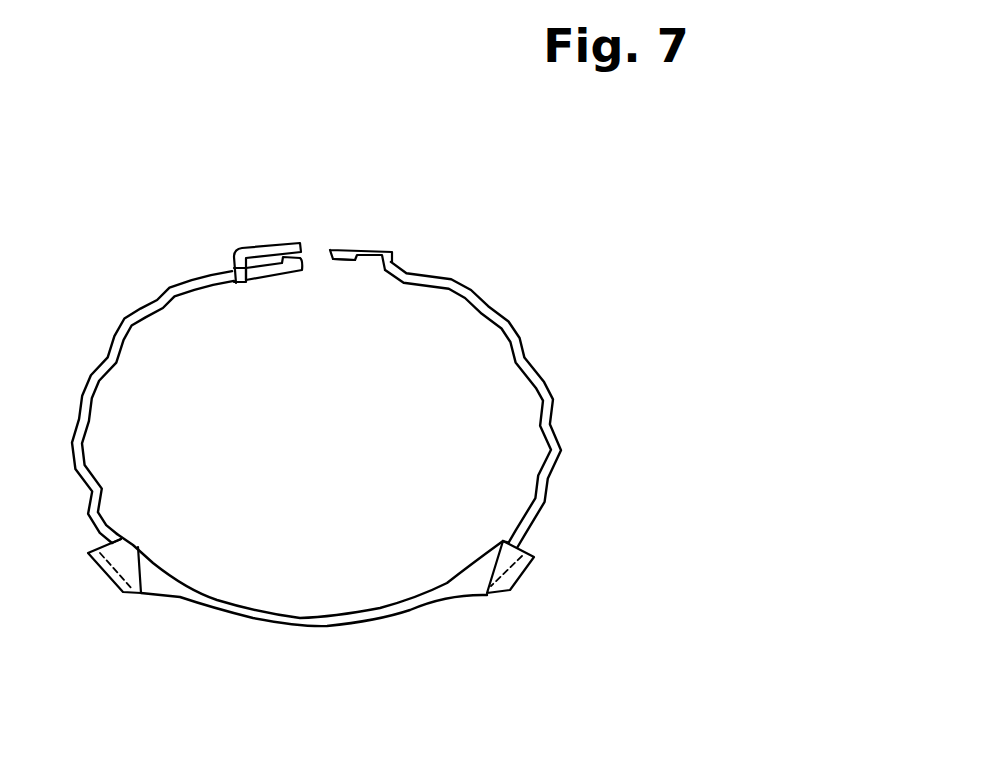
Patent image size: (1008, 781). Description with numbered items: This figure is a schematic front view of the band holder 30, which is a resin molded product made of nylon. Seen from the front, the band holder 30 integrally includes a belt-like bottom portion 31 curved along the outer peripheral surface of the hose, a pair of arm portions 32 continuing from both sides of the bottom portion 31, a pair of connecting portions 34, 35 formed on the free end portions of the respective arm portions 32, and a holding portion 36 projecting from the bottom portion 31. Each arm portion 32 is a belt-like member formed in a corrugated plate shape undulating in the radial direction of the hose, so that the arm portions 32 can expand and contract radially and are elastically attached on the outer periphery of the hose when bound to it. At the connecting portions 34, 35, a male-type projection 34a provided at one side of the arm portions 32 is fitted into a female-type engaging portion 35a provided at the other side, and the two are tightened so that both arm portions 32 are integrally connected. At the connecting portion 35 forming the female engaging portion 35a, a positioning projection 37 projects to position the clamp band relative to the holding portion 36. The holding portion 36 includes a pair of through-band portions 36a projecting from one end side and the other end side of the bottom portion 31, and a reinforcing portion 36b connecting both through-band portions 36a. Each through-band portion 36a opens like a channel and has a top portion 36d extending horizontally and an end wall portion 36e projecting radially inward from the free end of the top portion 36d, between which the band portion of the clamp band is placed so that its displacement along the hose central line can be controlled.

The band holder 30 is at (466, 214).
The bottom portion 31 is at (310, 612).
The arm portions 32 is at (157, 303).
The connecting portion 34 is at (372, 243).
The male-type projection 34a is at (343, 263).
The connecting portion 35 is at (263, 257).
The female-type engaging portion 35a is at (290, 274).
The holding portion 36 is at (352, 592).
The through-band portions 36a is at (95, 576).
The reinforcing portion 36b is at (380, 618).
The top portion 36d is at (133, 590).
The end wall portion 36e is at (143, 572).
The positioning projection 37 is at (242, 287).